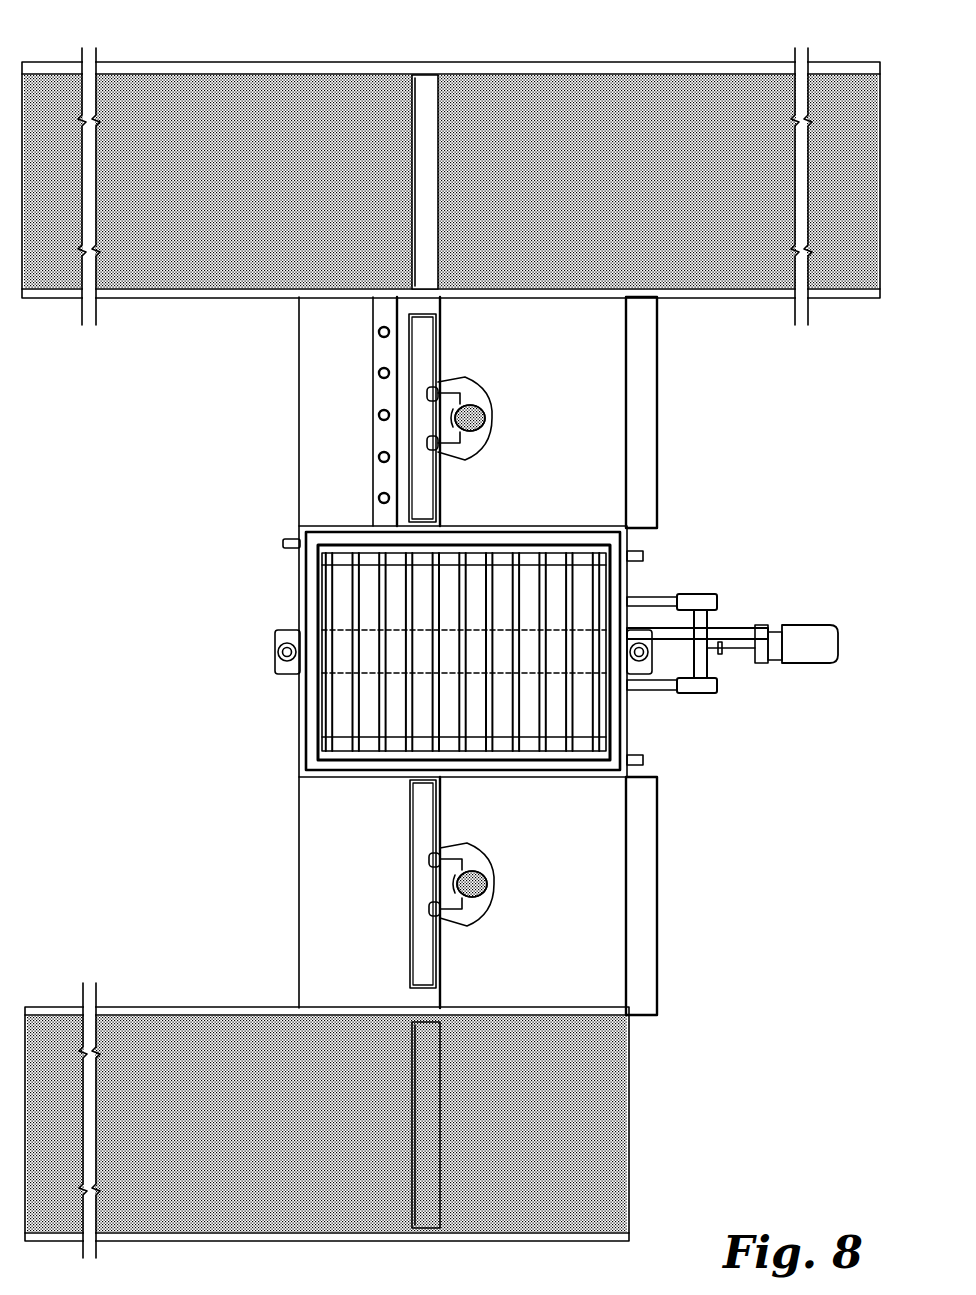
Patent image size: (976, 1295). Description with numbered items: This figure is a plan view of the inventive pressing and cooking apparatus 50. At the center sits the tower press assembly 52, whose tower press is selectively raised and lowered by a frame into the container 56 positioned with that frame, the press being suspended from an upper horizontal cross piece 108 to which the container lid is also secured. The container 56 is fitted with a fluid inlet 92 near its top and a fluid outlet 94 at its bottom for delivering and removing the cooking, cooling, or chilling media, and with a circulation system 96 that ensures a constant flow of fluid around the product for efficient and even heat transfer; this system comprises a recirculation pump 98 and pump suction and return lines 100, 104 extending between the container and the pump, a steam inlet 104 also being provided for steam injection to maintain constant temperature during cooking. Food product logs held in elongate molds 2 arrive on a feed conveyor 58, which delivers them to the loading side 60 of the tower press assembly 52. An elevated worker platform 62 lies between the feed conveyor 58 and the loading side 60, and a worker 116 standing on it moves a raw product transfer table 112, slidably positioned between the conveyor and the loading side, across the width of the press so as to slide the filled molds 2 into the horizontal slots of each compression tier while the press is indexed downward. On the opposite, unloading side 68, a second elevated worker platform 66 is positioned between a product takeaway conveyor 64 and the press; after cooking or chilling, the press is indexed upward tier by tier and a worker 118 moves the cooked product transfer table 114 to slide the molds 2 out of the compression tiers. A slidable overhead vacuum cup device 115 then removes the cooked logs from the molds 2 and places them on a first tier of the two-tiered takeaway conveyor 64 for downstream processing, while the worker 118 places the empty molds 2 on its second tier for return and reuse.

The elongate mold 2 is at (425, 108).
The pressing and cooking apparatus 50 is at (787, 738).
The tower press assembly 52 is at (357, 685).
The container 56 is at (537, 525).
The feed conveyor 58 is at (257, 1032).
The loading side 60 is at (520, 777).
The elevated worker platform 62 is at (583, 900).
The product takeaway conveyor 64 is at (548, 103).
The second elevated worker platform 66 is at (607, 368).
The unloading side 68 is at (583, 527).
The fluid inlet 92 is at (285, 537).
The fluid outlet 94 is at (645, 762).
The circulation system 96 is at (783, 617).
The recirculation pump 98 is at (823, 663).
The pump suction line 100 is at (652, 594).
The pump return line 104 is at (643, 552).
The upper horizontal cross piece 108 is at (278, 630).
The raw product transfer table 112 is at (405, 913).
The cooked product transfer table 114 is at (443, 477).
The overhead vacuum cup device 115 is at (373, 443).
The worker 116 is at (490, 898).
The worker 118 is at (480, 405).